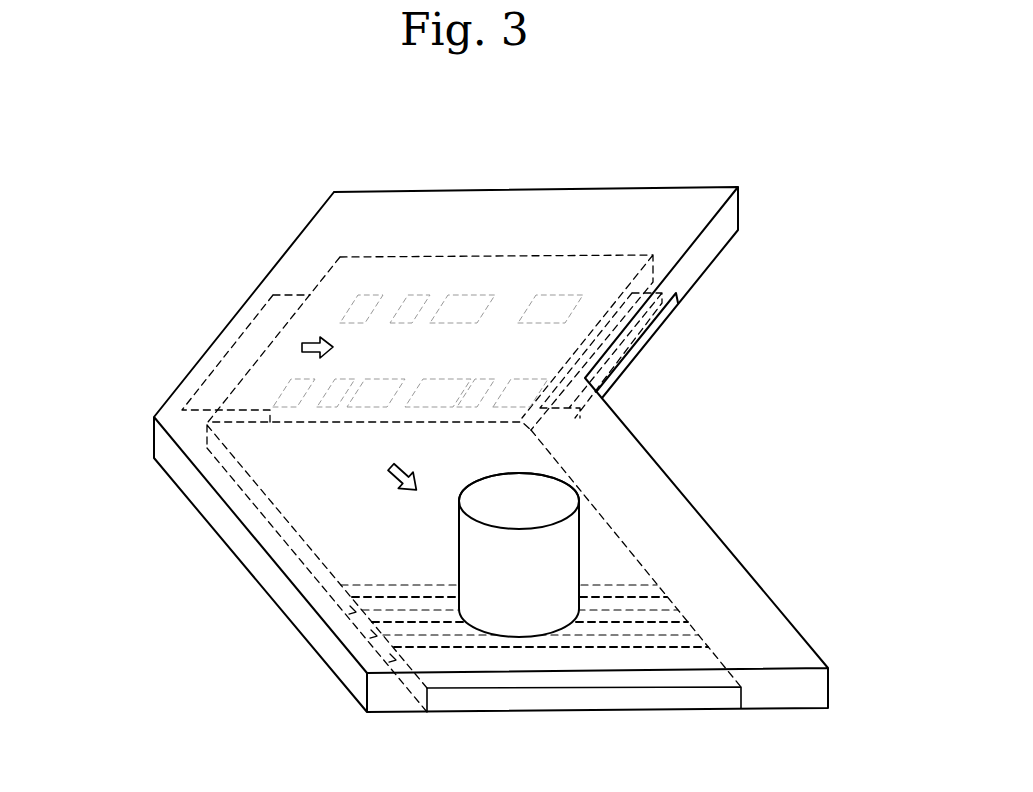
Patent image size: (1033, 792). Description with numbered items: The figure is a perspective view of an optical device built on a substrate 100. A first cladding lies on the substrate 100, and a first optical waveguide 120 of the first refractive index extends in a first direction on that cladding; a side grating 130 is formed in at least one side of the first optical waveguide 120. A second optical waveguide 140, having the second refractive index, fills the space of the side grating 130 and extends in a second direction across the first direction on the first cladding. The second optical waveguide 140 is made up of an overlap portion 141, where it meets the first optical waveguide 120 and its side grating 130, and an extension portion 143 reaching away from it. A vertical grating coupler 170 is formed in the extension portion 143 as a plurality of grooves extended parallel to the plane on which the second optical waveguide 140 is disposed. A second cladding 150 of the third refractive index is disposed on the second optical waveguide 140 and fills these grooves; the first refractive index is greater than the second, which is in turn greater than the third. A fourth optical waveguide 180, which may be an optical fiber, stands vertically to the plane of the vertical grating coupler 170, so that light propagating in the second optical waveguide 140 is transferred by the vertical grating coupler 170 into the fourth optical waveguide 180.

The substrate 100 is at (772, 101).
The first optical waveguide 120 is at (625, 340).
The side grating 130 is at (462, 318).
The second optical waveguide 140 is at (82, 432).
The overlap portion 141 is at (207, 417).
The extension portion 143 is at (237, 472).
The second cladding 150 is at (828, 684).
The vertical grating coupler 170 is at (366, 616).
The fourth optical waveguide 180 is at (563, 502).